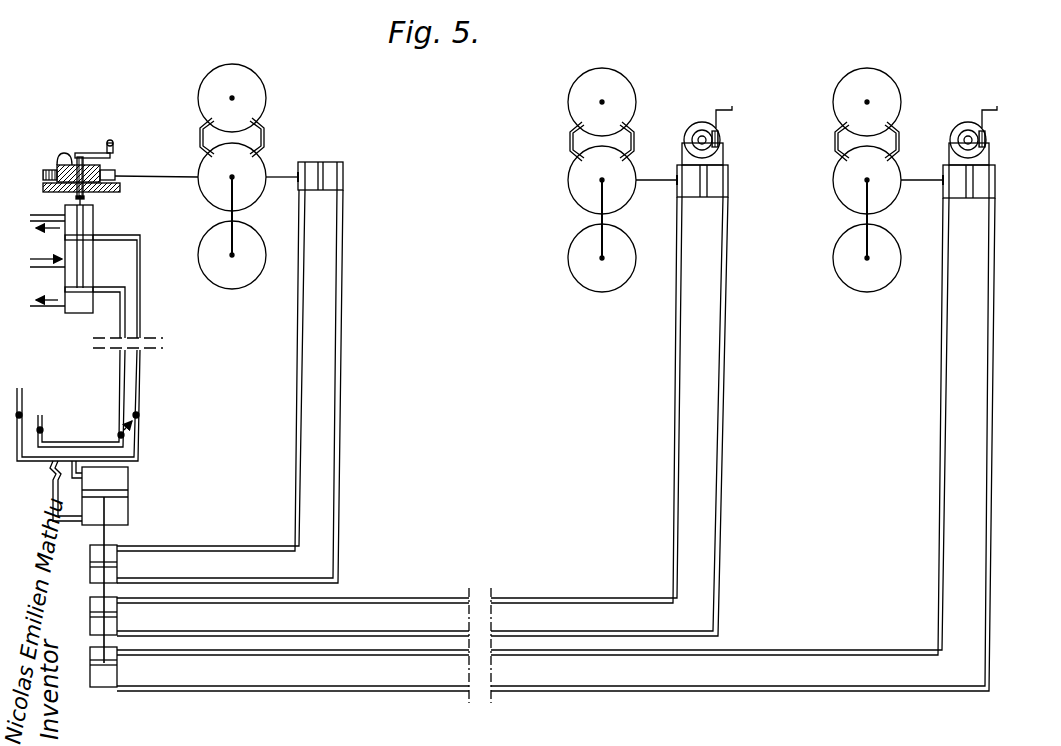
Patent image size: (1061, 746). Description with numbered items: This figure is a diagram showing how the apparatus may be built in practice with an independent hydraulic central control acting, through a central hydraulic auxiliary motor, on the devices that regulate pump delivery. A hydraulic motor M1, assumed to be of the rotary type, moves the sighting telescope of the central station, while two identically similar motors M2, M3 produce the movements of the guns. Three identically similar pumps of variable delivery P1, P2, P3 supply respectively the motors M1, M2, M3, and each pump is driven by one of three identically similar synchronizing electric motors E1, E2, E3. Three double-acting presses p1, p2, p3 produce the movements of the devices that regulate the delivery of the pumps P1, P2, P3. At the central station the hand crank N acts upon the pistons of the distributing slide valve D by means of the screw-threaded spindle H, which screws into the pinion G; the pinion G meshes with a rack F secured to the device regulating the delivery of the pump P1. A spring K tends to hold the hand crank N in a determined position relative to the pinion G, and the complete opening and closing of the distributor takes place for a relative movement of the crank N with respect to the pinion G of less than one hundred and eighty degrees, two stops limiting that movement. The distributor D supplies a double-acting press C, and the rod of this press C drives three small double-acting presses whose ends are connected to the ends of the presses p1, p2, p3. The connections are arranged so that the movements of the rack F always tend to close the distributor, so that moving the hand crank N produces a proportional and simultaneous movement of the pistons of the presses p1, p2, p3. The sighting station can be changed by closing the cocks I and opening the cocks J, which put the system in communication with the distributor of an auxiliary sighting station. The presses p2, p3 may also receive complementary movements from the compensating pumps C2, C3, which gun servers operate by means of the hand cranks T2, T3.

The hydraulic motor M1 is at (256, 99).
The pump of variable delivery P1 is at (252, 167).
The synchronizing electric motor E1 is at (252, 268).
The double-acting press p1 is at (304, 184).
The hydraulic motor M2 is at (622, 93).
The pump of variable delivery P2 is at (618, 172).
The synchronizing electric motor E2 is at (618, 248).
The compensating pump C2 is at (693, 128).
The hand crank T2 is at (738, 107).
The double-acting press p2 is at (718, 180).
The hydraulic motor M3 is at (882, 93).
The pump of variable delivery P3 is at (888, 172).
The synchronizing electric motor E3 is at (887, 250).
The compensating pump C3 is at (962, 128).
The hand crank T3 is at (1002, 107).
The double-acting press p3 is at (984, 180).
The spring K is at (66, 154).
The screw-threaded spindle H is at (83, 164).
The hand crank N is at (113, 147).
The pinion G is at (44, 170).
The rack F is at (43, 181).
The distributing slide valve D is at (72, 275).
The cock J is at (40, 430).
The cock I is at (125, 433).
The double-acting press C is at (122, 512).